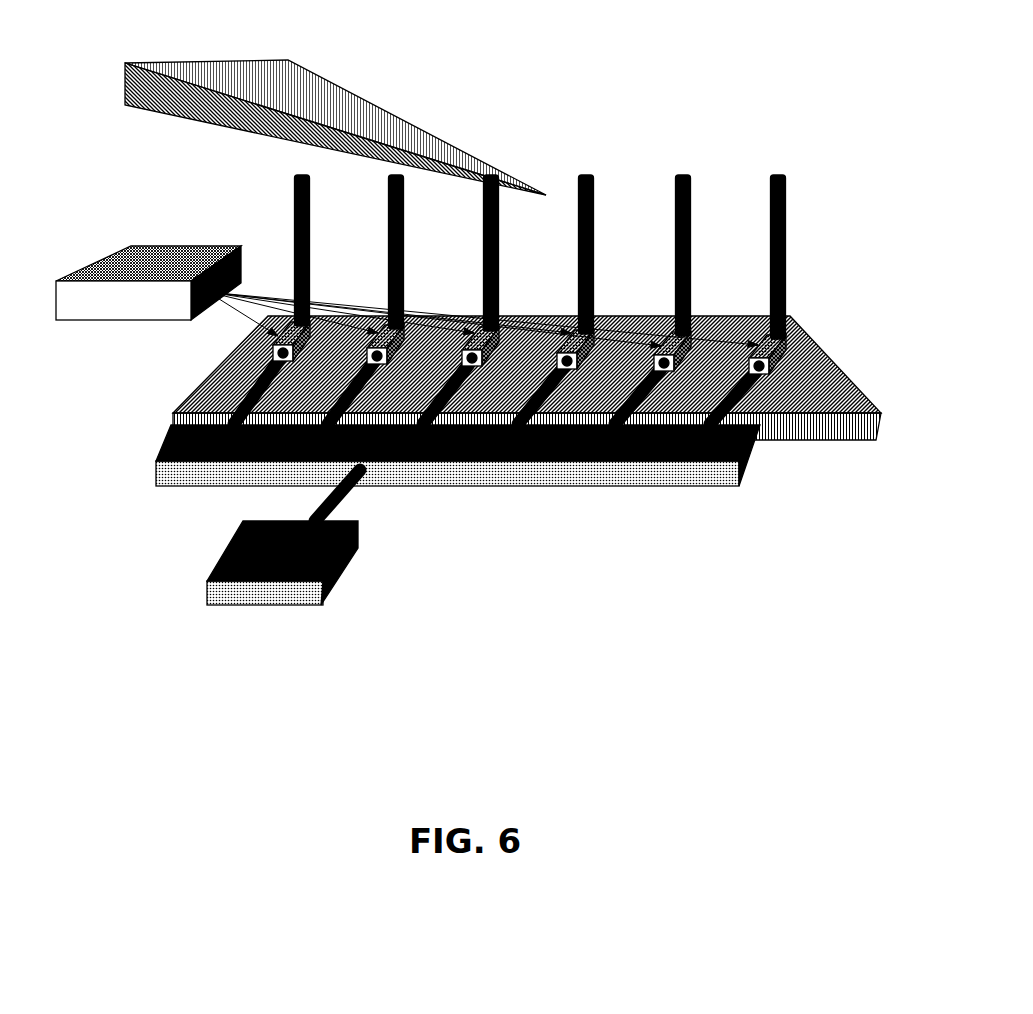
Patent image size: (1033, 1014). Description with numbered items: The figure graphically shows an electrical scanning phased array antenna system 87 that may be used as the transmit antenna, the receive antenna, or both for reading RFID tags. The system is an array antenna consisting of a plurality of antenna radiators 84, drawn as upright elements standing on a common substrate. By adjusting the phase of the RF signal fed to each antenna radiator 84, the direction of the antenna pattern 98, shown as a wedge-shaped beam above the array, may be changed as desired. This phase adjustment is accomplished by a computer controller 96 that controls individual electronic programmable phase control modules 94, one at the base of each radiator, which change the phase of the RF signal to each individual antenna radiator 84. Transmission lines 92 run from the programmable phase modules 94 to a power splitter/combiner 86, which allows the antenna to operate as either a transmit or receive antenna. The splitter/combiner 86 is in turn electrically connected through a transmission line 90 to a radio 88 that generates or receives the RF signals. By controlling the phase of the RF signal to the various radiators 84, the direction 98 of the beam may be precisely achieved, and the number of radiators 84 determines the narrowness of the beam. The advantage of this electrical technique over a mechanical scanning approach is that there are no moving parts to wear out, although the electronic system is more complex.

The antenna radiators 84 is at (586, 192).
The power splitter/combiner 86 is at (640, 474).
The electrical scanning phased array antenna system 87 is at (678, 84).
The radio 88 is at (327, 578).
The transmission line 90 is at (337, 493).
The transmission lines 92 is at (541, 392).
The electronic programmable phase control modules 94 is at (292, 337).
The computer controller 96 is at (122, 312).
The antenna pattern direction 98 is at (209, 116).